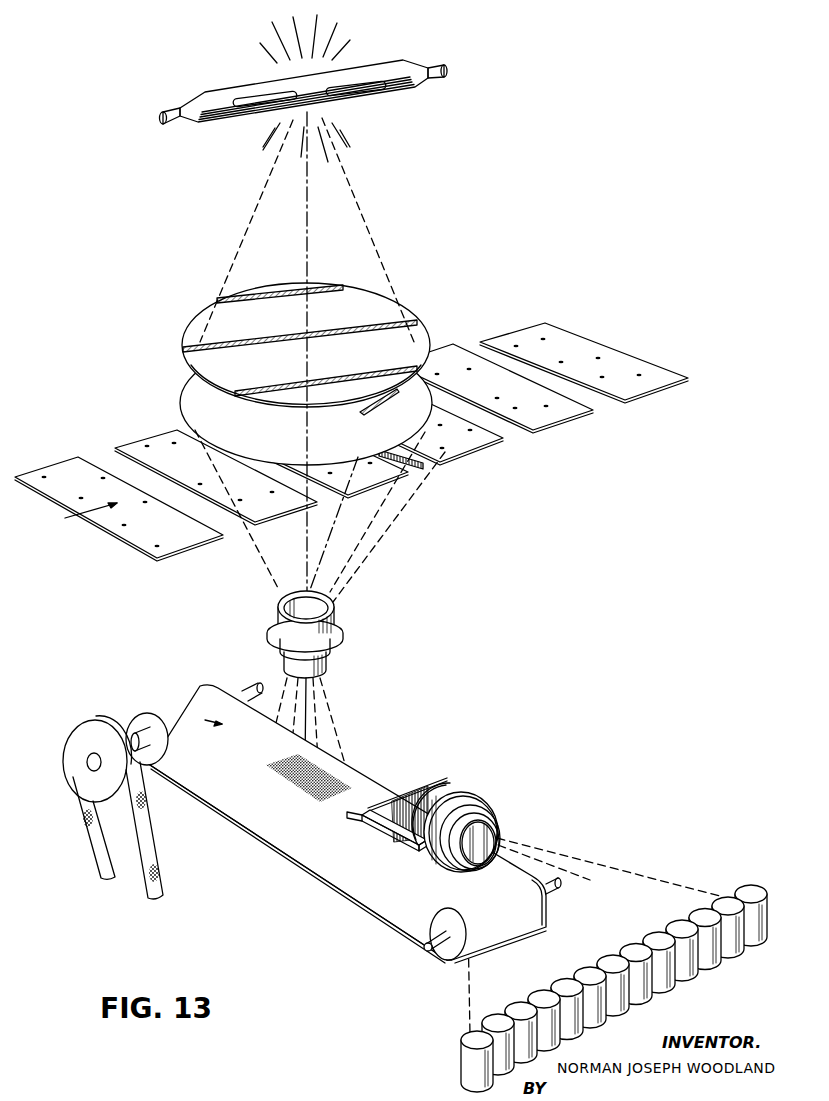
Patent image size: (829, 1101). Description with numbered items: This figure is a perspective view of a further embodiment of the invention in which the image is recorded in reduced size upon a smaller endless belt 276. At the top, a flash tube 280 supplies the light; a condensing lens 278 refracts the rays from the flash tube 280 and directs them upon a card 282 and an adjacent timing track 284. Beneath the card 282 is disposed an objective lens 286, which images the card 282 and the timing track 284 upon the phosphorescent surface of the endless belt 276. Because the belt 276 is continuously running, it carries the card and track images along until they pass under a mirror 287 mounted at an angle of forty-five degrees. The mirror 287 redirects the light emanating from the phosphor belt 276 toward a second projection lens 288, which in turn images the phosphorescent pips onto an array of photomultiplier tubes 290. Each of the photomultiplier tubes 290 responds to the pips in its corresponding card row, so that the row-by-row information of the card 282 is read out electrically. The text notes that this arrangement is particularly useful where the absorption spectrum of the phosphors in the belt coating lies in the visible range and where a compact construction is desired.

The endless belt 276 is at (318, 866).
The condensing lens 278 is at (393, 307).
The flash tube 280 is at (389, 101).
The card 282 is at (378, 475).
The timing track 284 is at (423, 468).
The objective lens 286 is at (336, 623).
The mirror 287 is at (434, 778).
The second projection lens 288 is at (478, 812).
The photomultiplier tubes 290 is at (722, 899).